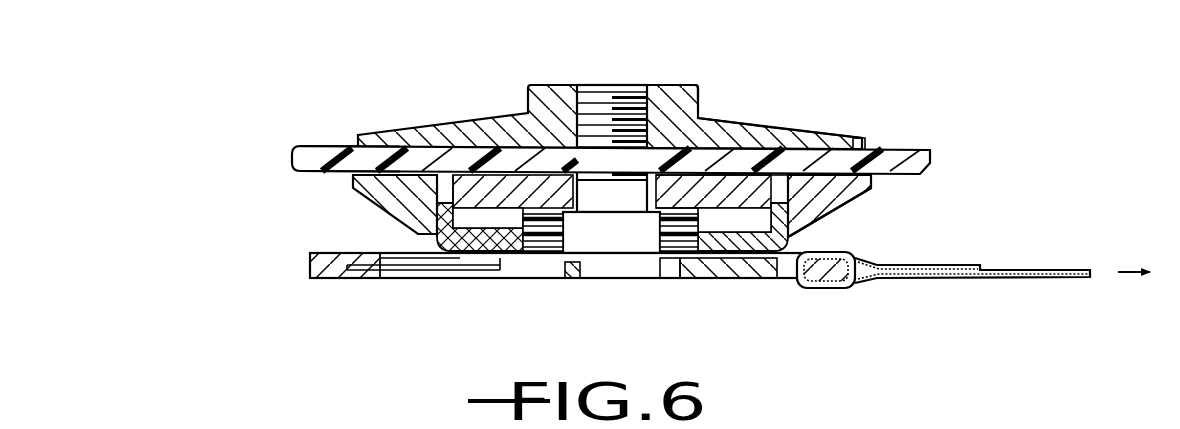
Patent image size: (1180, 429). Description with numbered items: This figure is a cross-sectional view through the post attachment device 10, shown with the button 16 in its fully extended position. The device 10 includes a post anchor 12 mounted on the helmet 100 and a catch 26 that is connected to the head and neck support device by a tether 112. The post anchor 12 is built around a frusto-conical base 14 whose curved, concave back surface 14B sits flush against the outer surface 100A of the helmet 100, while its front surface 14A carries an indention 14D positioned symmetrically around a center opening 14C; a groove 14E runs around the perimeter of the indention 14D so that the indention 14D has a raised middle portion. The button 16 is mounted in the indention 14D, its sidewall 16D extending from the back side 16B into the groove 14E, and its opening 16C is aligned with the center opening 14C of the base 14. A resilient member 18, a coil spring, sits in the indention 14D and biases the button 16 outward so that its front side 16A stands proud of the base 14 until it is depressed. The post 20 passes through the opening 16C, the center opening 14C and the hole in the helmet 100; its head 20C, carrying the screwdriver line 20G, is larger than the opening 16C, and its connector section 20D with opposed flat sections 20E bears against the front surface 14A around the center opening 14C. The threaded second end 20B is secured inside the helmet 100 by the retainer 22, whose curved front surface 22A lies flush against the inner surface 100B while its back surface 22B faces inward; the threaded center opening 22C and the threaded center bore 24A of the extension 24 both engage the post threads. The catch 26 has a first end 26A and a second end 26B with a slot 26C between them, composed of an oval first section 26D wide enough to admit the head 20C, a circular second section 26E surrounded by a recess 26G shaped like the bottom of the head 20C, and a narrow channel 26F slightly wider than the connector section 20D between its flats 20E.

The post attachment device 10 is at (788, 65).
The post anchor 12 is at (1003, 83).
The base 14 is at (855, 195).
The front surface 14A is at (824, 221).
The back surface 14B is at (406, 162).
The center opening 14C is at (700, 116).
The indention 14D is at (456, 255).
The groove 14E is at (455, 174).
The button 16 is at (482, 200).
The front side 16A is at (708, 262).
The back side 16B is at (778, 130).
The opening 16C is at (660, 263).
The sidewall 16D is at (436, 216).
The resilient member 18 is at (690, 216).
The post 20 is at (586, 111).
The second end 20B is at (608, 83).
The head 20C is at (673, 258).
The connector section 20D is at (600, 233).
The flat sections 20E is at (497, 256).
The line 20G is at (610, 268).
The retainer 22 is at (862, 141).
The front surface 22A is at (848, 159).
The back surface 22B is at (820, 131).
The center opening 22C is at (652, 112).
The extension 24 is at (533, 98).
The center bore 24A is at (644, 84).
The catch 26 is at (771, 273).
The first end 26A is at (848, 286).
The second end 26B is at (320, 280).
The slot 26C is at (750, 265).
The first section 26D is at (713, 274).
The second section 26E is at (392, 279).
The channel 26F is at (477, 279).
The recess 26G is at (360, 279).
The helmet 100 is at (292, 158).
The outer surface 100A is at (304, 176).
The inner surface 100B is at (306, 142).
The tether 112 is at (972, 279).